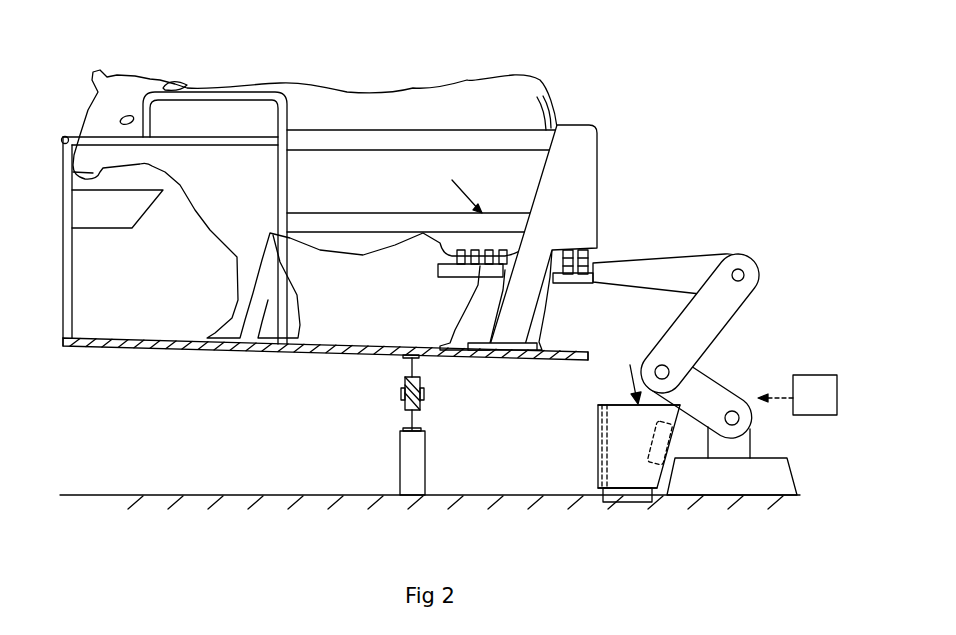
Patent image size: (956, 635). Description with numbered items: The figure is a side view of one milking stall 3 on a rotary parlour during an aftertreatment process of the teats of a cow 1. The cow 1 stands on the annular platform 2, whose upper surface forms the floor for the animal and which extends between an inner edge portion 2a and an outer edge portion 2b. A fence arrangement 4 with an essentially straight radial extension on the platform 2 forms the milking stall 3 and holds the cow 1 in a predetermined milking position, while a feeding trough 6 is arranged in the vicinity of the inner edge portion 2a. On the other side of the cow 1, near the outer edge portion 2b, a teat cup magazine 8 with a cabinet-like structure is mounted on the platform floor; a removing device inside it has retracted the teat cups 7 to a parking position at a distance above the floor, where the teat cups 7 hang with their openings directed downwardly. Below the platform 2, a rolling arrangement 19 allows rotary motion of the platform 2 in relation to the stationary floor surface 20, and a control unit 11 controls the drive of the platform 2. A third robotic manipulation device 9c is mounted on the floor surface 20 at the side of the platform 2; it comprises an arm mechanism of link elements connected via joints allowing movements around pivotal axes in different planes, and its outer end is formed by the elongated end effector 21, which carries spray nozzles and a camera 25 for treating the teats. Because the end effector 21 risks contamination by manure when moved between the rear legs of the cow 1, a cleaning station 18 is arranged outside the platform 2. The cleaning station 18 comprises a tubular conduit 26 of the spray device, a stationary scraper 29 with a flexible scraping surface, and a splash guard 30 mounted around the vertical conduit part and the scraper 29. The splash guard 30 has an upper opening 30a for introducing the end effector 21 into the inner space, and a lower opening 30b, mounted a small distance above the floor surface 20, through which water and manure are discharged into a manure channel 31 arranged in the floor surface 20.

The cow 1 is at (325, 98).
The platform 2 is at (250, 347).
The inner edge portion 2a is at (63, 342).
The outer edge portion 2b is at (588, 352).
The milking stall 3 is at (364, 314).
The fence arrangement 4 is at (353, 142).
The feeding trough 6 is at (102, 215).
The teat cups 7 is at (592, 258).
The teat cup magazine 8 is at (575, 180).
The third robotic manipulation device 9c is at (743, 252).
The control unit 11 is at (815, 382).
The cleaning station 18 is at (634, 370).
The rolling arrangement 19 is at (403, 395).
The floor surface 20 is at (254, 494).
The end effector 21 is at (442, 272).
The camera 25 is at (500, 257).
The tubular conduit 26 is at (602, 452).
The scraper 29 is at (658, 452).
The splash guard 30 is at (620, 432).
The upper opening 30a is at (605, 405).
The lower opening 30b is at (635, 505).
The manure channel 31 is at (608, 498).